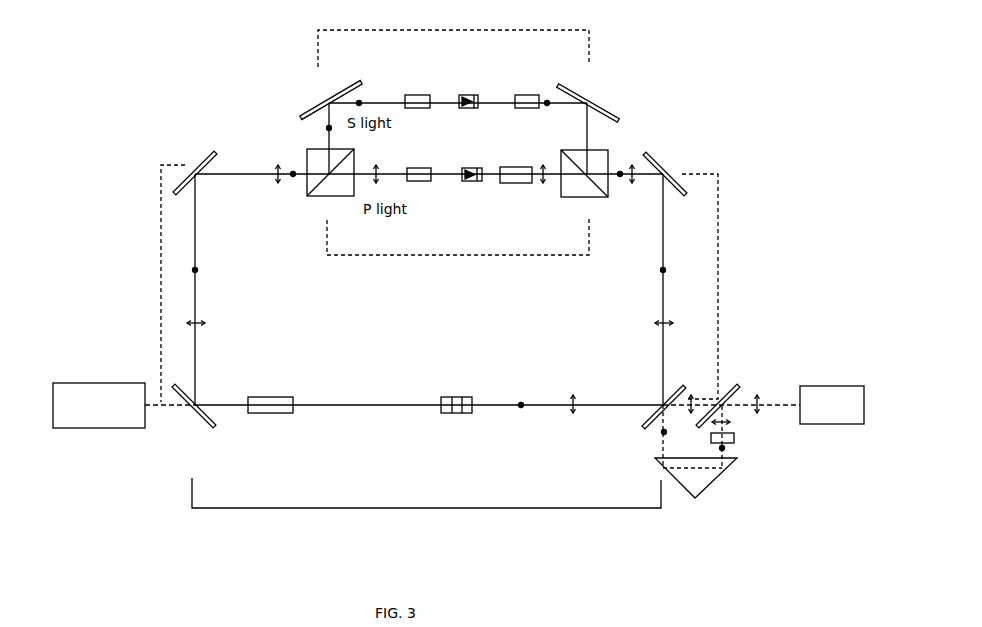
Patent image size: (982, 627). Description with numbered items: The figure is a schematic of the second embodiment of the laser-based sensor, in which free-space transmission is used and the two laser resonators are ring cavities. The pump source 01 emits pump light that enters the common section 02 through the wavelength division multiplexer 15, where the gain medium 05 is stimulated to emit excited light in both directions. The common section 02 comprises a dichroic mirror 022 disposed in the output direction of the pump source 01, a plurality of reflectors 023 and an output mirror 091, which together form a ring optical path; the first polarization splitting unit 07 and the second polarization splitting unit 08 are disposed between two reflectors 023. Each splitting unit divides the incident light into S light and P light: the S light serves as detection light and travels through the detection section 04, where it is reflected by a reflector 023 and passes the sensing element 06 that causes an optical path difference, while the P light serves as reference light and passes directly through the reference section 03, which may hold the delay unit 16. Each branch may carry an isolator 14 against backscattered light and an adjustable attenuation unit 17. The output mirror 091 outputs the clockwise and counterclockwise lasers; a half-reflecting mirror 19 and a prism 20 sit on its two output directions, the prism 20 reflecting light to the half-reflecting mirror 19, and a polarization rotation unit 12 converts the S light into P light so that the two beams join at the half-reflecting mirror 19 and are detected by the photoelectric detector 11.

The pump source 01 is at (96, 372).
The common section 02 is at (445, 349).
The reference section 03 is at (458, 247).
The detection section 04 is at (453, 38).
The gain medium 05 is at (279, 430).
The sensing element 06 is at (545, 78).
The first polarization splitting unit 07 is at (311, 138).
The second polarization splitting unit 08 is at (614, 140).
The output mirror 091 is at (680, 378).
The dichroic mirror 022 is at (210, 423).
The reflector 023 is at (454, 143).
The photoelectric detector 11 is at (835, 433).
The polarization rotation unit 12 is at (754, 449).
The isolator 14 is at (482, 168).
The wavelength division multiplexer 15 is at (470, 430).
The delay unit 16 is at (527, 197).
The adjustable attenuation unit 17 is at (433, 138).
The half-reflecting mirror 19 is at (740, 378).
The prism 20 is at (715, 483).